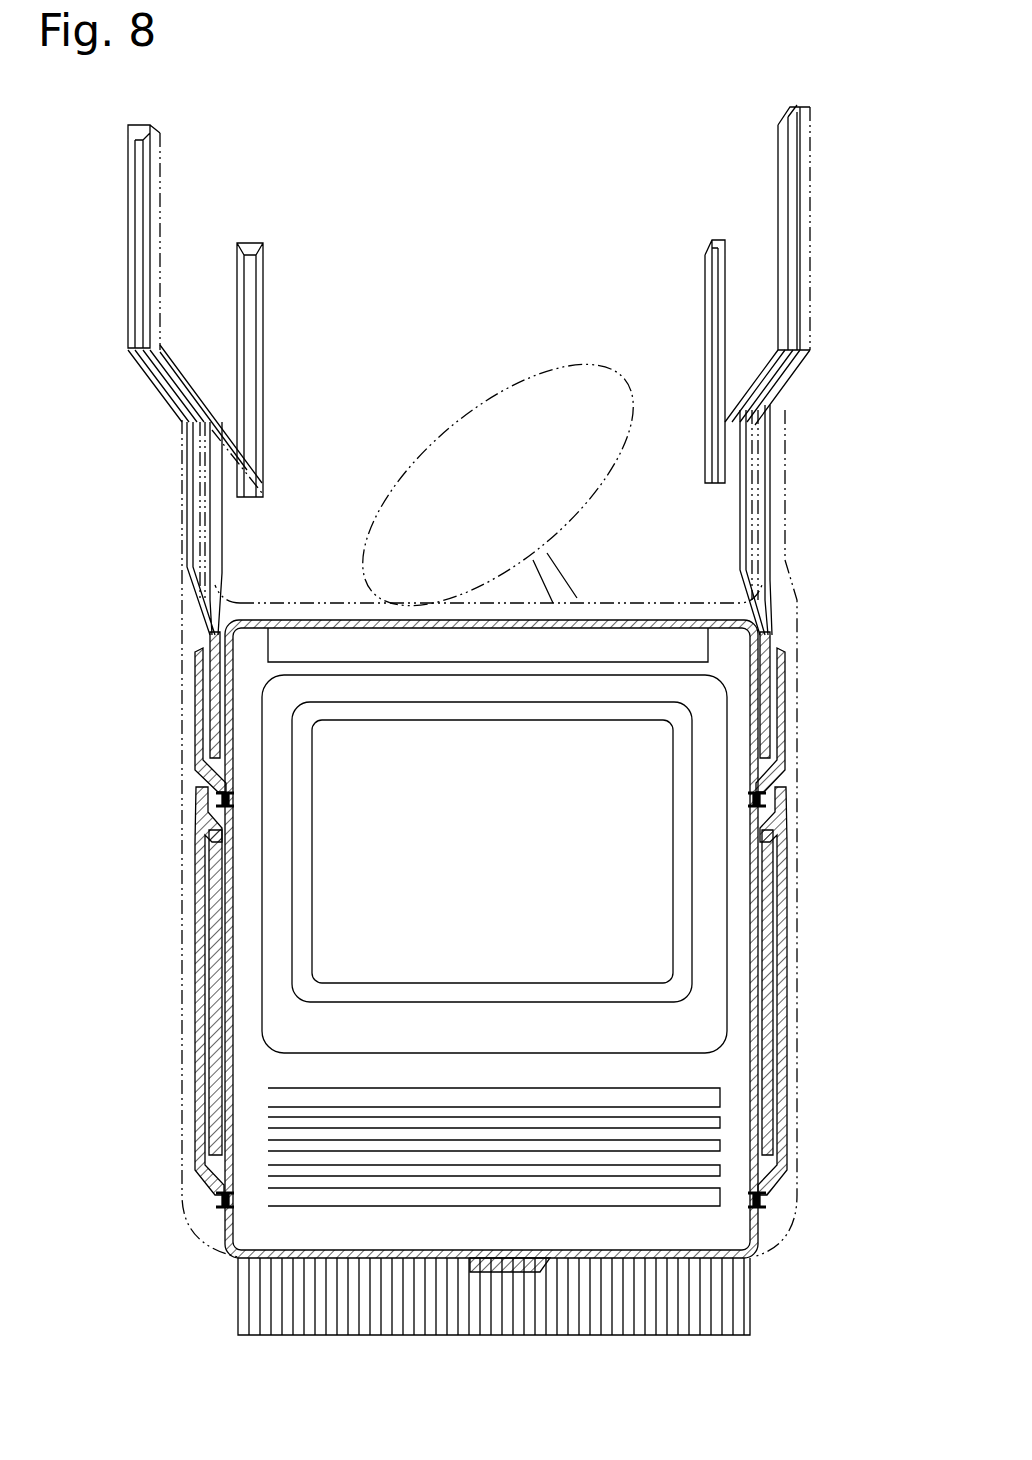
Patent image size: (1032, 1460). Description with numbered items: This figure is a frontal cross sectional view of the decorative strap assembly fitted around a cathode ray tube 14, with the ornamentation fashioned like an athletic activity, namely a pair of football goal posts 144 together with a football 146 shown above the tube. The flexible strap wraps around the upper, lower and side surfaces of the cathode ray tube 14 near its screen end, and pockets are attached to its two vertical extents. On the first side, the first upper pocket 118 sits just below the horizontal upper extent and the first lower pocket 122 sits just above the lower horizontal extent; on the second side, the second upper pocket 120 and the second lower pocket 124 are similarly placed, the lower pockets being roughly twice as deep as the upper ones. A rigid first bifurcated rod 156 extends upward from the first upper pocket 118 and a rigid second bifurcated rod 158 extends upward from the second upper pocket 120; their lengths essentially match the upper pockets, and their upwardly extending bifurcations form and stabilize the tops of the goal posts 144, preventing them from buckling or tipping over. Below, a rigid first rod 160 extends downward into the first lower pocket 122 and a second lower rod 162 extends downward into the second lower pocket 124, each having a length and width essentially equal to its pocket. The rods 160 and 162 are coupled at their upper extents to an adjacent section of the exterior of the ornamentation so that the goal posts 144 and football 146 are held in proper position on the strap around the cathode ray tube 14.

The cathode ray tube 14 is at (487, 921).
The first upper pocket 118 is at (206, 693).
The second upper pocket 120 is at (782, 697).
The first lower pocket 122 is at (195, 1002).
The second lower pocket 124 is at (785, 1003).
The football goal posts 144 is at (180, 462).
The football 146 is at (578, 355).
The first bifurcated rod 156 is at (188, 508).
The second bifurcated rod 158 is at (772, 525).
The first rod 160 is at (213, 920).
The second lower rod 162 is at (770, 932).